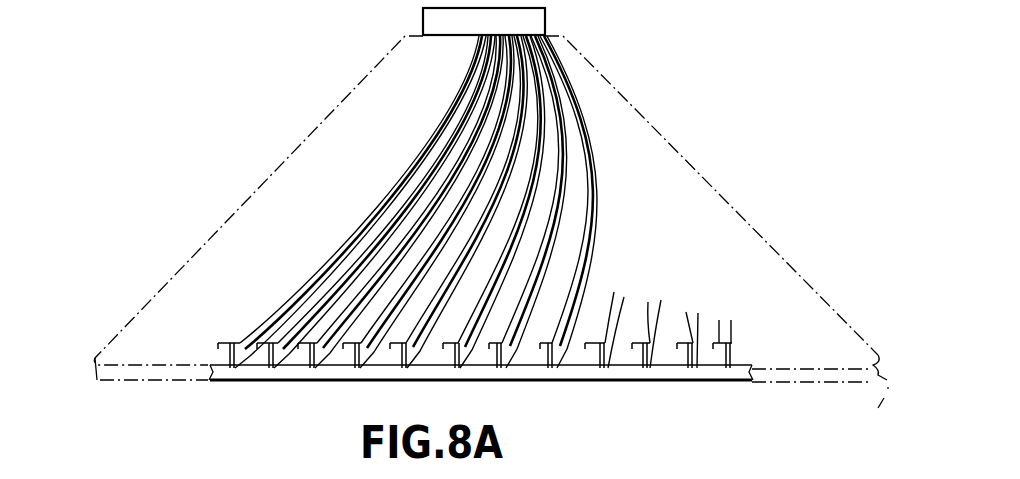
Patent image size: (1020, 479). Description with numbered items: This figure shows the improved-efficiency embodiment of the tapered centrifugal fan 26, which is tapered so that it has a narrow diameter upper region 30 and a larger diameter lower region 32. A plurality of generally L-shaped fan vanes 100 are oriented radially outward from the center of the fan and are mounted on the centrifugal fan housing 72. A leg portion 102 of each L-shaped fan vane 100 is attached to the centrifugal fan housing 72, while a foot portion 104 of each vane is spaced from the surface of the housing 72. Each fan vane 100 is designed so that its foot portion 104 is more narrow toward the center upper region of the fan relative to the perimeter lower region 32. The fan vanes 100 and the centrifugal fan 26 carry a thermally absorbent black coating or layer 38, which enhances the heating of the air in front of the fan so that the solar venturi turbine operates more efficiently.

The centrifugal fan 26 is at (242, 415).
The narrow diameter upper region 30 is at (548, 21).
The larger diameter lower region 32 is at (876, 399).
The thermally absorbent black coating 38 is at (463, 22).
The centrifugal fan housing 72 is at (333, 372).
The L-shaped fan vane 100 is at (572, 141).
The leg portion 102 is at (517, 353).
The foot portion 104 is at (481, 92).